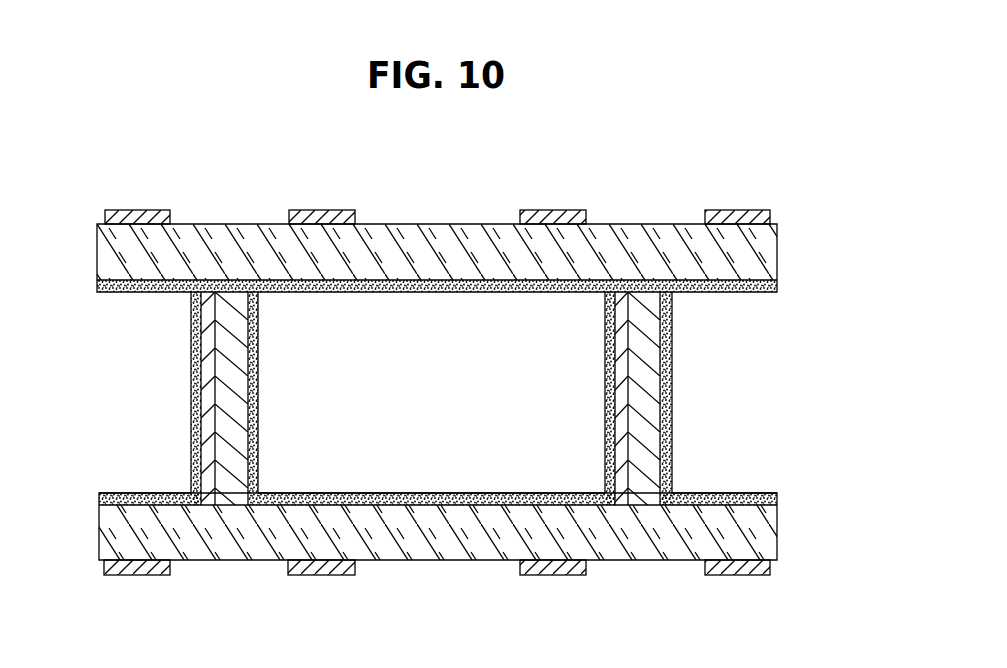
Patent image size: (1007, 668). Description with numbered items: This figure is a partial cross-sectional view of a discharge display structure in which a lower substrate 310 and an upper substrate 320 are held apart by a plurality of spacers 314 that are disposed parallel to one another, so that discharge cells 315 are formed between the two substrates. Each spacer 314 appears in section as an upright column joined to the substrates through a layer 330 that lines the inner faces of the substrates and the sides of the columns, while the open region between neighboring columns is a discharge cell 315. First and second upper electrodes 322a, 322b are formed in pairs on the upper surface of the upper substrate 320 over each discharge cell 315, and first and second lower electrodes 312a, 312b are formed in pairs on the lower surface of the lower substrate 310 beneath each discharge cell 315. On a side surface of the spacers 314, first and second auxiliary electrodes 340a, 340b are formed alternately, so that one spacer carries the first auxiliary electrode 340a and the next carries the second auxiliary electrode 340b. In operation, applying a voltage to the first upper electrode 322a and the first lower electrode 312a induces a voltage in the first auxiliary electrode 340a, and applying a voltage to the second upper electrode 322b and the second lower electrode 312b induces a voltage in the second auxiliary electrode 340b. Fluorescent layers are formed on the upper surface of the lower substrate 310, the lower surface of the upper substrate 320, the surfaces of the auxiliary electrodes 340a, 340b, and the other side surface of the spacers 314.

The lower substrate 310 is at (768, 531).
The first lower electrode 312a is at (137, 575).
The second lower electrode 312b is at (553, 575).
The spacer 314 is at (223, 395).
The discharge cell 315 is at (462, 396).
The upper substrate 320 is at (768, 258).
The first upper electrode 322a is at (140, 210).
The second upper electrode 322b is at (554, 210).
The adhesive / bonding layer 330 is at (772, 291).
The first auxiliary electrode 340a is at (207, 505).
The second auxiliary electrode 340b is at (622, 505).